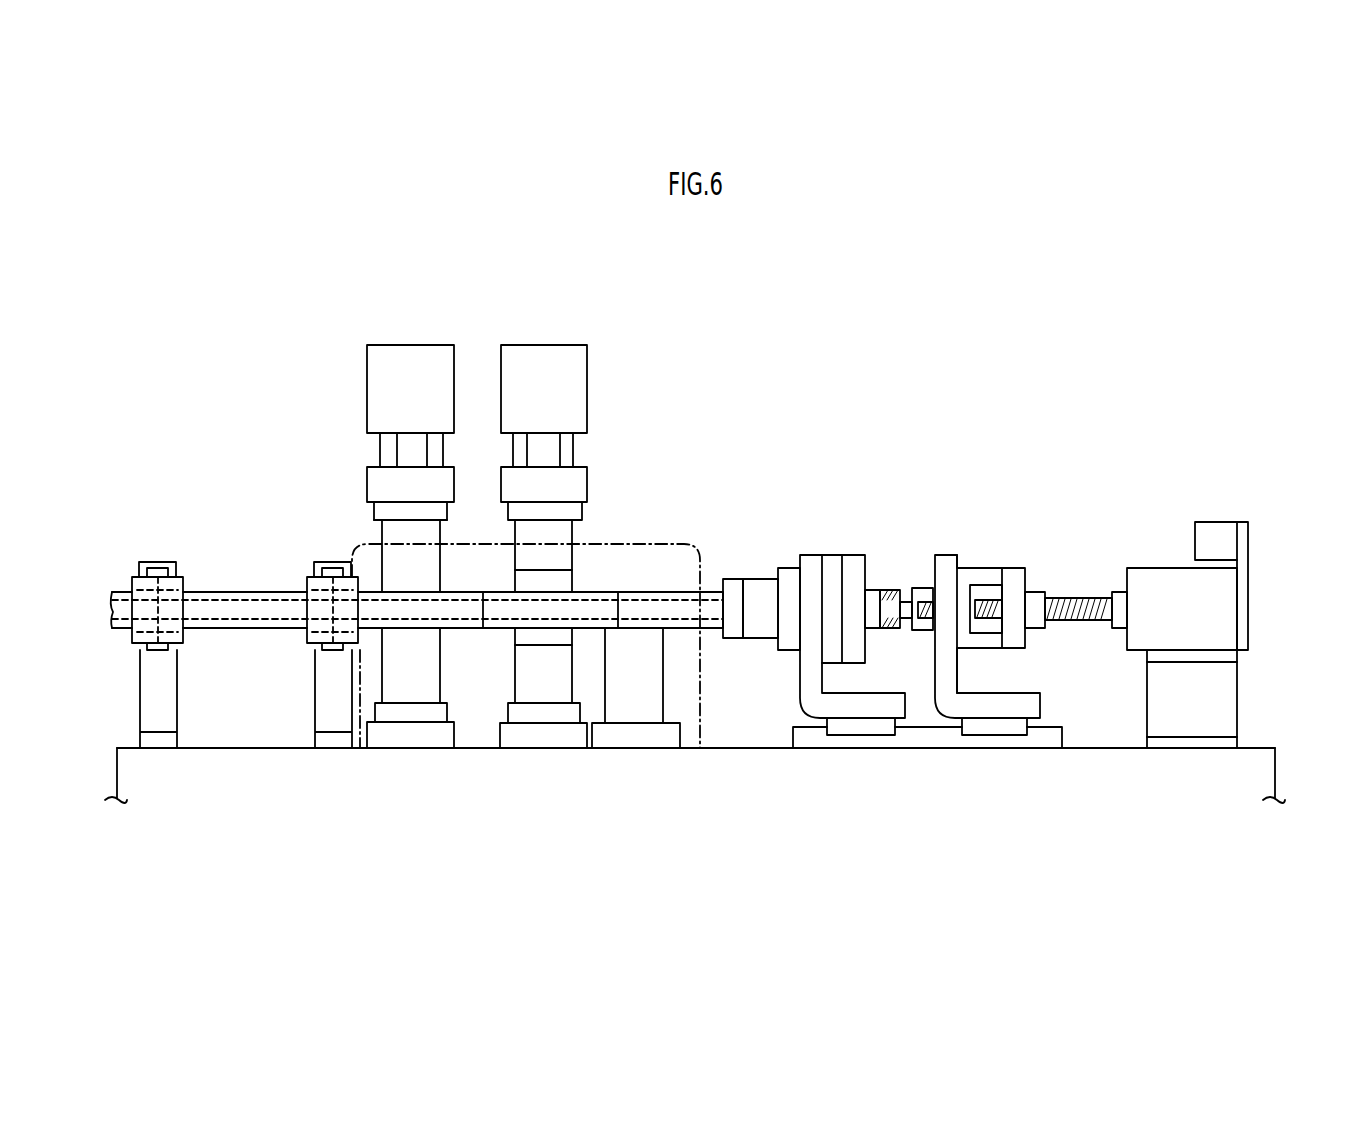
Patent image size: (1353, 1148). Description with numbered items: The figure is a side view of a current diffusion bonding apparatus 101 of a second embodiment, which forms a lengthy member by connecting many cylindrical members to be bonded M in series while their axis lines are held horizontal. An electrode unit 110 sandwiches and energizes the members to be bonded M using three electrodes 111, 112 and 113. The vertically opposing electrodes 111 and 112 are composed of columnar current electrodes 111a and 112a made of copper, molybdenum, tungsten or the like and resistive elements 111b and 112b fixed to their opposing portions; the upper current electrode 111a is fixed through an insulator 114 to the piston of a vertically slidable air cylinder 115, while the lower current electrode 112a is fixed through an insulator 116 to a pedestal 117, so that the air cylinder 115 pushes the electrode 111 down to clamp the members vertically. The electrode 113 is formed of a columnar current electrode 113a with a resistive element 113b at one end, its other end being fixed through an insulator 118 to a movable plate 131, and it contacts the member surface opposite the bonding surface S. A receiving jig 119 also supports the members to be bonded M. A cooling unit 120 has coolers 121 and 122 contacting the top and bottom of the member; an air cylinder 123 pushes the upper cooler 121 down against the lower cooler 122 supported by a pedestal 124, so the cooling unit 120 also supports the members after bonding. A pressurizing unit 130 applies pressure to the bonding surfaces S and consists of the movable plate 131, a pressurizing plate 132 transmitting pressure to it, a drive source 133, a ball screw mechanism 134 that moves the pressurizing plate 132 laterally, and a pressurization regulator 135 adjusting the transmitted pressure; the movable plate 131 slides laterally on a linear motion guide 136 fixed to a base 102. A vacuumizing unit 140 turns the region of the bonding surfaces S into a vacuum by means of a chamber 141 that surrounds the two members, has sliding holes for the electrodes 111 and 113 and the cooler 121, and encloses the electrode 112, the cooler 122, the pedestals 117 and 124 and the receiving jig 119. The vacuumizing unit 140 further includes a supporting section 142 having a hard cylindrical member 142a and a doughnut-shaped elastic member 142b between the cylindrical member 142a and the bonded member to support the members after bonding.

The current diffusion bonding apparatus 101 is at (900, 322).
The base 102 is at (1278, 773).
The electrode unit 110 is at (696, 422).
The electrode 111 is at (651, 440).
The current electrode 111a is at (563, 535).
The resistive element 111b is at (568, 578).
The electrode 112 is at (653, 762).
The current electrode 112a is at (548, 690).
The resistive element 112b is at (557, 637).
The electrode 113 is at (768, 500).
The current electrode 113a is at (756, 580).
The resistive element 113b is at (723, 590).
The insulator 114 is at (557, 512).
The air cylinder 115 is at (585, 360).
The insulator 116 is at (527, 717).
The pedestal 117 is at (540, 738).
The insulator 118 is at (788, 568).
The receiving jig 119 is at (658, 692).
The cooling unit 120 is at (340, 450).
The cooler 121 is at (390, 535).
The cooler 122 is at (432, 658).
The air cylinder 123 is at (372, 375).
The pedestal 124 is at (390, 745).
The pressurizing unit 130 is at (929, 508).
The movable plate 131 is at (862, 712).
The pressurizing plate 132 is at (998, 712).
The drive source 133 is at (1215, 522).
The ball screw mechanism 134 is at (1082, 580).
The pressurization regulator 135 is at (890, 588).
The linear motion guide 136 is at (937, 738).
The vacuumizing unit 140 is at (728, 742).
The chamber 141 is at (700, 640).
The supporting section 142 is at (127, 556).
The cylindrical member 142a is at (138, 647).
The elastic member 142b is at (135, 632).
The members to be bonded M is at (618, 590).
The bonding surface S is at (618, 603).